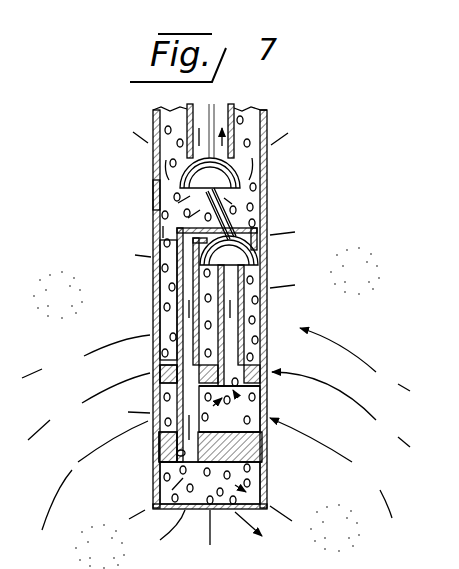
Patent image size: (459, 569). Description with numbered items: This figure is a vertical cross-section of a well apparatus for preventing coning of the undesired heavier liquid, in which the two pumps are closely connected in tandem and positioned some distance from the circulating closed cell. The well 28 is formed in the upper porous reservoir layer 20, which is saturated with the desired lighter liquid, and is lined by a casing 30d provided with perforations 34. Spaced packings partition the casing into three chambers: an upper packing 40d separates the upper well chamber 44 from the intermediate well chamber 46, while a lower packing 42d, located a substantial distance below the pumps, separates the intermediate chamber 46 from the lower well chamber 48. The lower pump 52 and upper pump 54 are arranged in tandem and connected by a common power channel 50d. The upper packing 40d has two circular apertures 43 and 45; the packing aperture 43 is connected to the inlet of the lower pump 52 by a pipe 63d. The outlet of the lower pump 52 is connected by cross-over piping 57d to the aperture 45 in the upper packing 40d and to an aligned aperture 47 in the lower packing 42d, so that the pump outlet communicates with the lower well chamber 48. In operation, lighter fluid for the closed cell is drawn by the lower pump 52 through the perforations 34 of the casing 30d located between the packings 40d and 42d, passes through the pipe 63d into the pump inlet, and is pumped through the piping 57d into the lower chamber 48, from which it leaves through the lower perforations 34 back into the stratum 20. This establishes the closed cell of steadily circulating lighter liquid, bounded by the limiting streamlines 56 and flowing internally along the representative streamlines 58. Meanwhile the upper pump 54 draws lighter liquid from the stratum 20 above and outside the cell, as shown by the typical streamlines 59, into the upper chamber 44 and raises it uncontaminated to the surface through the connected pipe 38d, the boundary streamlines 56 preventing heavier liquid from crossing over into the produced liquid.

The upper porous reservoir layer 20 is at (206, 408).
The well 28 is at (158, 196).
The casing 30d is at (267, 159).
The perforations 34 is at (157, 280).
The pipe 38d is at (253, 137).
The upper packing 40d is at (262, 372).
The lower packing 42d is at (264, 450).
The packing aperture 43 is at (264, 398).
The upper well chamber 44 is at (177, 231).
The aperture 45 is at (154, 385).
The intermediate well chamber 46 is at (229, 409).
The aligned aperture 47 is at (158, 460).
The lower well chamber 48 is at (210, 483).
The common power channel 50d is at (258, 210).
The lower pump 52 is at (229, 251).
The upper pump 54 is at (210, 173).
The limiting streamlines 56 is at (219, 409).
The cross-over piping 57d is at (158, 293).
The representative streamlines 58 is at (206, 486).
The typical streamlines 59 is at (216, 360).
The pipe 63d is at (246, 313).